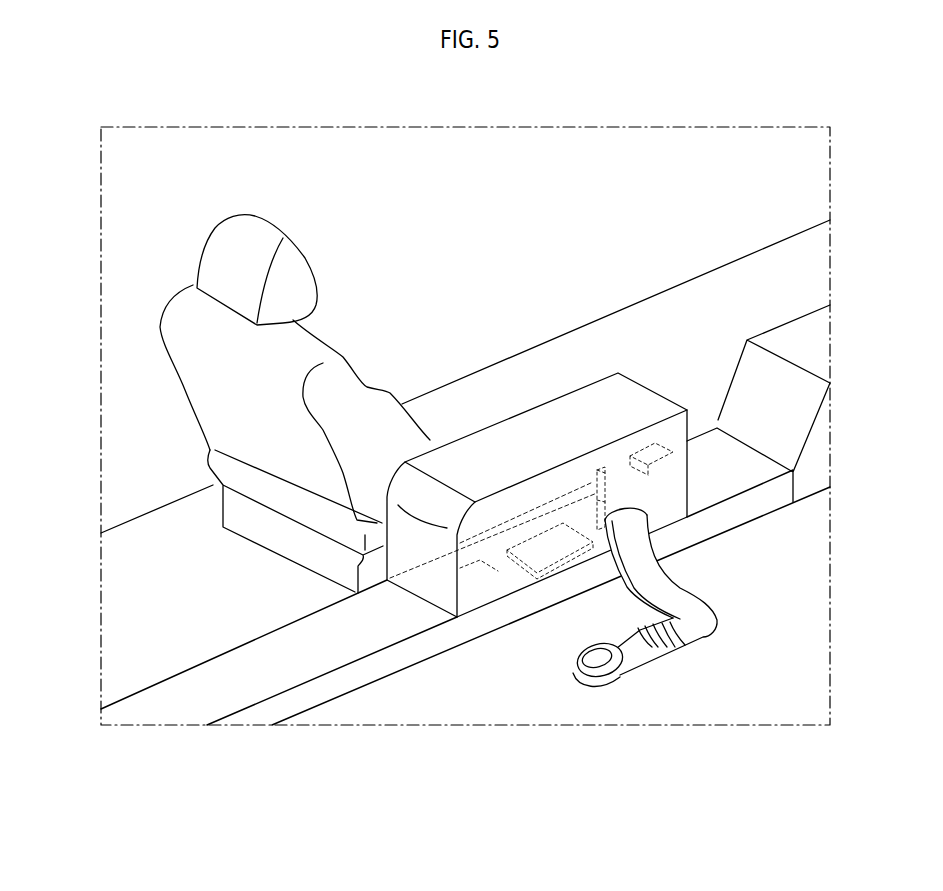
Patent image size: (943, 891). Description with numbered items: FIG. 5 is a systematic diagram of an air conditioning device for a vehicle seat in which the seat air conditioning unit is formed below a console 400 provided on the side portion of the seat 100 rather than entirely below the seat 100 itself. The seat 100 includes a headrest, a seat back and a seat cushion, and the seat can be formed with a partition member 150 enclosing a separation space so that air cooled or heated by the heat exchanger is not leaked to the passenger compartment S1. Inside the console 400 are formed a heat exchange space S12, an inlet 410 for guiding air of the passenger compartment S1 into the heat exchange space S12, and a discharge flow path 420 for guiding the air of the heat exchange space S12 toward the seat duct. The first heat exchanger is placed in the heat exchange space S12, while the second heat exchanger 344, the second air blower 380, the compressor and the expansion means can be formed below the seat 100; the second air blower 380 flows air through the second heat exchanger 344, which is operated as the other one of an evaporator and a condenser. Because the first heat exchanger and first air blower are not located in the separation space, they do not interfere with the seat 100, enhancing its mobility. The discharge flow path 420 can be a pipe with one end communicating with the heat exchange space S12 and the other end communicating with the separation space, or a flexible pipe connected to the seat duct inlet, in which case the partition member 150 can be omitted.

The passenger compartment S1 is at (442, 183).
The seat 100 is at (208, 232).
The partition member 150 is at (233, 507).
The console 400 is at (533, 430).
The inlet 410 is at (678, 408).
The second air blower 380 is at (620, 488).
The second heat exchanger 344 is at (538, 556).
The heat exchange space S12 is at (490, 572).
The discharge flow path 420 is at (697, 625).